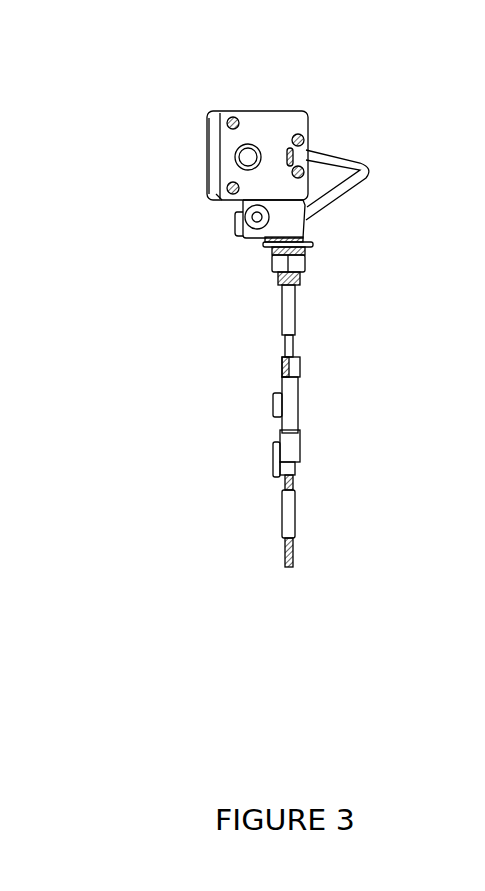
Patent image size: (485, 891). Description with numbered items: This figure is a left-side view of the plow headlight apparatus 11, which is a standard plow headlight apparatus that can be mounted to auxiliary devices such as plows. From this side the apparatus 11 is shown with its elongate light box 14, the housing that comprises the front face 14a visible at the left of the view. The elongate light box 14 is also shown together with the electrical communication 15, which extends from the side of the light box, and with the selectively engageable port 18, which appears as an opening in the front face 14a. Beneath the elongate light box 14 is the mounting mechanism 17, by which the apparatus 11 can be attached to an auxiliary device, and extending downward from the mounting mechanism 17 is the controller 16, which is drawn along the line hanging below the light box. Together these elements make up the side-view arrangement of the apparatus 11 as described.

The plow headlight apparatus 11 is at (183, 108).
The elongate light box 14 is at (278, 127).
The front face 14a is at (215, 160).
The electrical communication 15 is at (365, 171).
The controller 16 is at (298, 395).
The mounting mechanism 17 is at (267, 248).
The selectively engageable port 18 is at (250, 150).